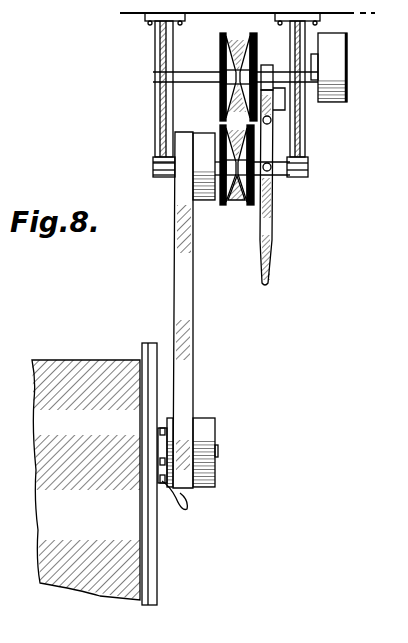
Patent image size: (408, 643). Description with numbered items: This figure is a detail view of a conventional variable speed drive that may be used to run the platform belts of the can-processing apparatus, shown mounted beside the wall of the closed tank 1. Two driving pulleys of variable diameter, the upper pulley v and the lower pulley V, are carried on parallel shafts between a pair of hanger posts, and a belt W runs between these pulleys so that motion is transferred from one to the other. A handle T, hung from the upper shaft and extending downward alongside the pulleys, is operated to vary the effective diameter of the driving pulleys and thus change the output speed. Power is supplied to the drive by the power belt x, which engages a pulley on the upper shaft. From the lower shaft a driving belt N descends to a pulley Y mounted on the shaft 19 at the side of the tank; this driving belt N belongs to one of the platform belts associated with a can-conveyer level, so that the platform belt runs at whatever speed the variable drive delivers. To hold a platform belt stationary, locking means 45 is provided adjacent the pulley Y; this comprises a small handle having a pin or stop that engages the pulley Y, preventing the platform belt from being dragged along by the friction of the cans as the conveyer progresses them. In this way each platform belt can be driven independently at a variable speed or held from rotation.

The driving pulley v is at (220, 58).
The driving pulley V is at (237, 138).
The belt W is at (235, 203).
The handle T is at (273, 233).
The power belt x is at (337, 42).
The driving belt N is at (175, 290).
The closed tank 1 is at (97, 343).
The pulley Y is at (213, 420).
The shaft 19 is at (218, 453).
The locking means 45 is at (187, 502).